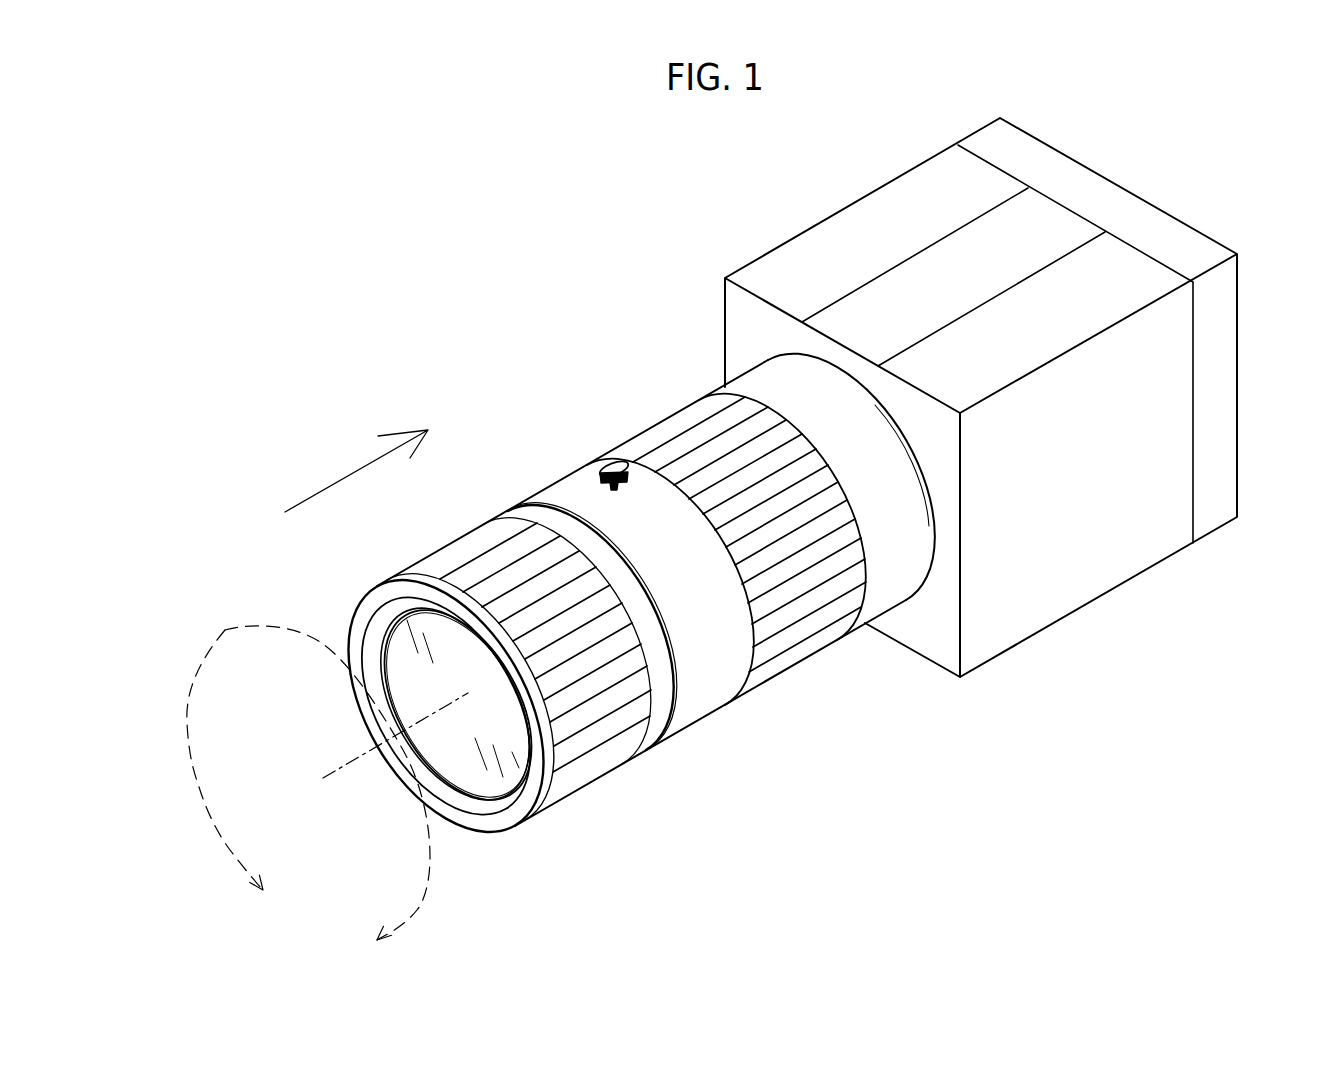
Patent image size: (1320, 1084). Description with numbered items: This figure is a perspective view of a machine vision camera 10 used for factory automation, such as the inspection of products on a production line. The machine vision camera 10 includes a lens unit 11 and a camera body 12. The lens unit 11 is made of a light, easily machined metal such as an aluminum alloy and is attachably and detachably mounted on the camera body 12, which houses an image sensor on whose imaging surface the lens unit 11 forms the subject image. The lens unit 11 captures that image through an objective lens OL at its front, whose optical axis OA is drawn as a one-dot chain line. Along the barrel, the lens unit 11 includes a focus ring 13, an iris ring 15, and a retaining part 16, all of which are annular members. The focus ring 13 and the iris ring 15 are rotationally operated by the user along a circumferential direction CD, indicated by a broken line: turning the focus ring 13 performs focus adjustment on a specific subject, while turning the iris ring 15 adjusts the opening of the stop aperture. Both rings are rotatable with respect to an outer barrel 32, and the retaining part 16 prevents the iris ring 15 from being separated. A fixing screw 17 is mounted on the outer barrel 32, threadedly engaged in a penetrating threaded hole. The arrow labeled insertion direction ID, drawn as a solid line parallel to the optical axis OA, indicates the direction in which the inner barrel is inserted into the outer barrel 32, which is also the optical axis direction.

The machine vision camera 10 is at (780, 160).
The lens unit 11 is at (634, 422).
The camera body 12 is at (809, 213).
The focus ring 13 is at (608, 619).
The iris ring 15 is at (807, 648).
The retaining part 16 is at (888, 603).
The fixing screw 17 is at (600, 462).
The outer barrel 32 is at (723, 690).
The optical axis OA is at (350, 760).
The objective lens OL is at (515, 753).
The circumferential direction CD is at (213, 643).
The insertion direction ID is at (342, 478).